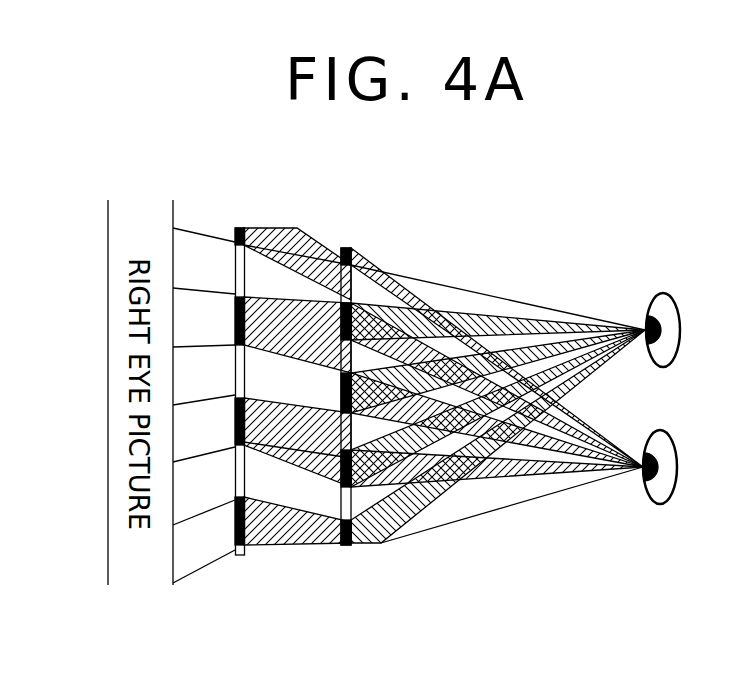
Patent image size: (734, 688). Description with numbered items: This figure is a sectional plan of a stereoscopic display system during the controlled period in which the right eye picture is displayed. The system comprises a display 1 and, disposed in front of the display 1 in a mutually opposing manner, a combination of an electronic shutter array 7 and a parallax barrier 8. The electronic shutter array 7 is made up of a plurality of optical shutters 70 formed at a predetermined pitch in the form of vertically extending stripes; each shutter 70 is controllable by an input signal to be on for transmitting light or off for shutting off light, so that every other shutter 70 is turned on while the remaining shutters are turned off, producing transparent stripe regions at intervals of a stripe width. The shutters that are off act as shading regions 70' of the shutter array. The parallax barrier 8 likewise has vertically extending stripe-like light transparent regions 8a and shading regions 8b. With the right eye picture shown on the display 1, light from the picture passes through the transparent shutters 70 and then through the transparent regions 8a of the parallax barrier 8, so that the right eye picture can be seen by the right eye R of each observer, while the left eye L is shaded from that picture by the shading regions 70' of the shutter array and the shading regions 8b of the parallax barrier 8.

The display 1 is at (108, 205).
The optical shutter 70 is at (209, 392).
The shading region of optical shutter 70' is at (193, 414).
The electronic shutter array 7 is at (202, 414).
The parallax barrier 8 is at (352, 250).
The light transparent region 8a is at (312, 277).
The shading region 8b is at (351, 303).
The right eye R is at (663, 293).
The left eye L is at (660, 504).